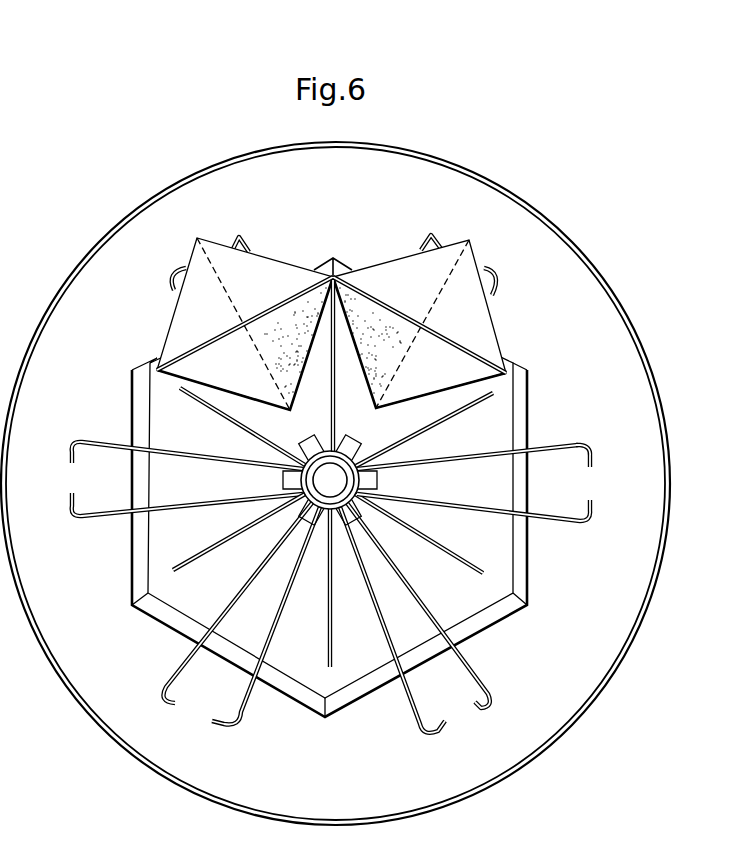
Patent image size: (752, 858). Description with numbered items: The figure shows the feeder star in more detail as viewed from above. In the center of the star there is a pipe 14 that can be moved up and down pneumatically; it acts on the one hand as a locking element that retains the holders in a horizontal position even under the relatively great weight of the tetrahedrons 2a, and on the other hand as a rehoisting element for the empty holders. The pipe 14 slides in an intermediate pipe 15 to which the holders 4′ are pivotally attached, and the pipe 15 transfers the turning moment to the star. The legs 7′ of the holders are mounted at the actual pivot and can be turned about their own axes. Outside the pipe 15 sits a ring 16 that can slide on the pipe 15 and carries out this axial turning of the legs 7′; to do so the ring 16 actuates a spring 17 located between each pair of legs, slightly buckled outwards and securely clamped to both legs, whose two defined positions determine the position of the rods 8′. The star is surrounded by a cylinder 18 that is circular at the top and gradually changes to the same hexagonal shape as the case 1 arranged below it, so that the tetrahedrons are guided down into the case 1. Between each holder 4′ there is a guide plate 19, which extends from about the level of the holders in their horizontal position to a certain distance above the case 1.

The case 1 is at (288, 703).
The pyramid element 2a is at (398, 268).
The holder 4′ is at (598, 424).
The leg of holder 7′ is at (561, 421).
The rod 8′ is at (591, 511).
The pipe 14 is at (277, 531).
The intermediate pipe 15 is at (382, 527).
The ring 16 is at (385, 462).
The spring 17 is at (385, 487).
The cylinder 18 is at (616, 270).
The guide plate 19 is at (448, 415).